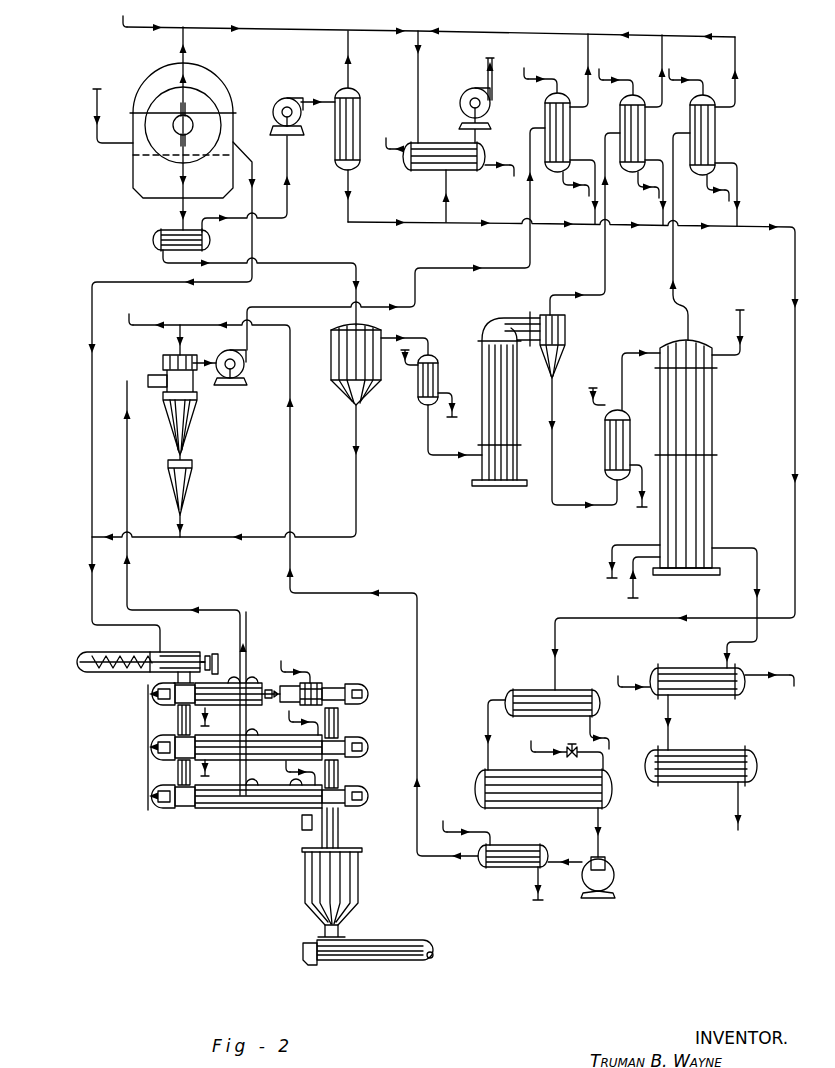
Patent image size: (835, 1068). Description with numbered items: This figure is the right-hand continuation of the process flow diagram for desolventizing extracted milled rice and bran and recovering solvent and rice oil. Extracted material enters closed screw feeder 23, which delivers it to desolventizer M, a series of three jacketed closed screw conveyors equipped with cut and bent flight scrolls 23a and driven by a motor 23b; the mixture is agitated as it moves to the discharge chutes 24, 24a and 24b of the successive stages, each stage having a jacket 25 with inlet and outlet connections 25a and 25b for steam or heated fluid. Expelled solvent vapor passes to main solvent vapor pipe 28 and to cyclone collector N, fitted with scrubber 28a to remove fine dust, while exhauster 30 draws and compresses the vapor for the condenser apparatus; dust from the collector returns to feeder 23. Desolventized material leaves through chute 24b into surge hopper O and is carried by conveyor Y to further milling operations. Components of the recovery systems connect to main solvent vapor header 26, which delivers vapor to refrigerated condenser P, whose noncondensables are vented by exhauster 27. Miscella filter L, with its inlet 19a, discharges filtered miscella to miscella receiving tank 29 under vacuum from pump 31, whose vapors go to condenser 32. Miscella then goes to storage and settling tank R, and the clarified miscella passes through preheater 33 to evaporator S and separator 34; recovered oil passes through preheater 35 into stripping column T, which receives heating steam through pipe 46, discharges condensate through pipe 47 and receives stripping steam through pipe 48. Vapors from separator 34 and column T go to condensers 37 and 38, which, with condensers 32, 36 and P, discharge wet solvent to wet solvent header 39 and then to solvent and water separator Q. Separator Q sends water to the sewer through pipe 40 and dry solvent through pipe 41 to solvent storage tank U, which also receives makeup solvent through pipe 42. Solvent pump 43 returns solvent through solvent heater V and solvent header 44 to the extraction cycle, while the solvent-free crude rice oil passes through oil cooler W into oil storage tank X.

The main solvent vapor header 26 is at (318, 31).
The miscella filter L is at (159, 66).
The feed inlet 19a is at (113, 145).
The miscella receiving tank 29 is at (151, 240).
The pump 31 is at (293, 97).
The condenser 32 is at (360, 112).
The wet solvent header 39 is at (469, 228).
The refrigerated condenser P is at (430, 170).
The exhauster 27 is at (464, 109).
The condenser 36 is at (545, 118).
The condenser 37 is at (620, 118).
The condenser 38 is at (715, 118).
The filtered miscella storage and settling tank R is at (369, 398).
The preheater 33 is at (460, 328).
The evaporator S is at (518, 318).
The separator 34 is at (578, 332).
The preheater 35 is at (605, 449).
The stripping column T is at (715, 432).
The pipe 46 is at (745, 338).
The pipe 47 is at (605, 570).
The pipe 48 is at (640, 592).
The cyclone collector N is at (197, 428).
The scrubber 28a is at (167, 355).
The exhauster 30 is at (256, 376).
The main solvent vapor pipe 28 is at (127, 590).
The closed screw feeder 23 is at (108, 675).
The motor 23b is at (224, 650).
The desolventizer M is at (262, 818).
The jacket 25 is at (235, 682).
The cut and bent flight scrolls 23a is at (280, 674).
The inlet connection 25a is at (318, 686).
The discharge chute 24 is at (344, 733).
The outlet connection 25b is at (180, 710).
The discharge chute 24a is at (173, 769).
The discharge chute 24b is at (340, 835).
The surge hopper O is at (362, 890).
The conveyor Y is at (387, 940).
The solvent header 44 is at (430, 634).
The solvent and water separator Q is at (523, 690).
The pipe 41 is at (488, 722).
The pipe 40 is at (602, 736).
The pipe 42 is at (545, 750).
The solvent storage tank U is at (614, 802).
The solvent pump 43 is at (615, 876).
The solvent heater V is at (545, 842).
The oil cooler W is at (691, 668).
The oil storage tank X is at (712, 752).